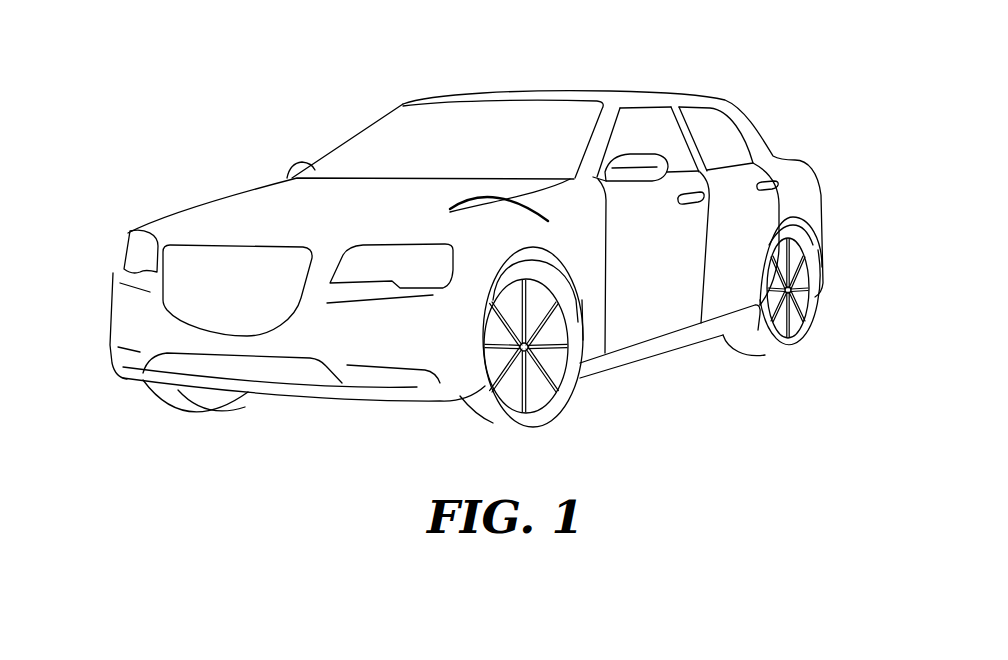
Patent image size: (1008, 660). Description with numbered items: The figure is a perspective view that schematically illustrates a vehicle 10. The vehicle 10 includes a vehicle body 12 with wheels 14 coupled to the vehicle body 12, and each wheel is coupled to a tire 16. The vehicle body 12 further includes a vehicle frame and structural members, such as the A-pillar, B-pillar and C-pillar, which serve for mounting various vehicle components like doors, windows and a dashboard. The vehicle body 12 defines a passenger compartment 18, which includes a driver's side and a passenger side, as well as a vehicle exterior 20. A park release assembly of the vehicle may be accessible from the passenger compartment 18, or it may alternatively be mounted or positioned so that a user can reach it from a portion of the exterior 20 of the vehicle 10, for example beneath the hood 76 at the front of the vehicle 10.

The vehicle 10 is at (156, 68).
The vehicle body 12 is at (239, 166).
The wheels 14 is at (553, 441).
The tire 16 is at (563, 389).
The passenger compartment 18 is at (651, 127).
The vehicle exterior 20 is at (334, 109).
The hood 76 is at (515, 220).